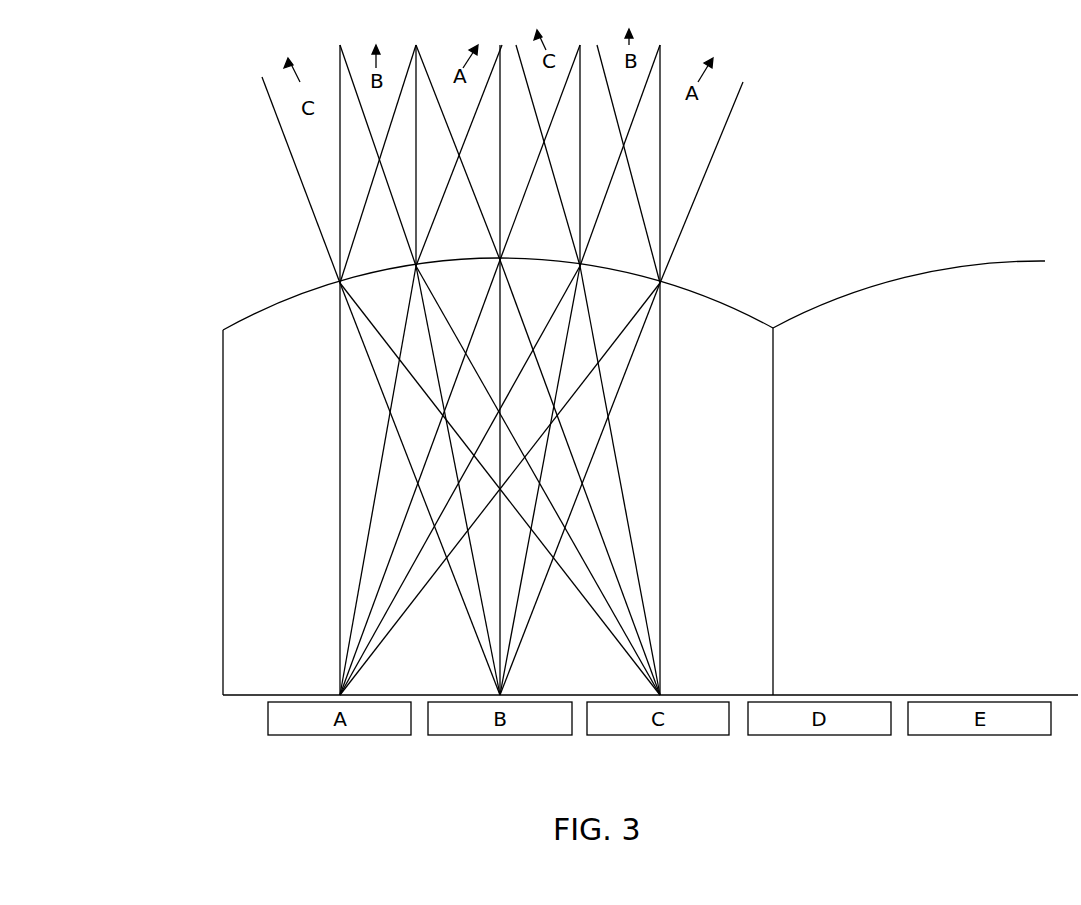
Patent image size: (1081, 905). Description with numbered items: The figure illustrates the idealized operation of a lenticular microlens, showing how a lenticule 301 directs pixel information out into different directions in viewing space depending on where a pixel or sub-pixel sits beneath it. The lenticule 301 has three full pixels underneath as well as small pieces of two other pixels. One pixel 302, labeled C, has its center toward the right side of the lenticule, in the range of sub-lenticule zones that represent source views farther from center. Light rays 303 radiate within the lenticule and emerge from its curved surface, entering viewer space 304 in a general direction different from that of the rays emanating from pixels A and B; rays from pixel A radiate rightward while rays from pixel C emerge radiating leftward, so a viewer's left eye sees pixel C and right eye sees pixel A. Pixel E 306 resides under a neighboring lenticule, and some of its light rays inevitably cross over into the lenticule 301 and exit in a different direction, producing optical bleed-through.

The lenticule 301 is at (740, 303).
The pixel 302 is at (692, 736).
The light rays 303 is at (642, 600).
The viewer space 304 is at (292, 211).
The pixel E 306 is at (945, 736).